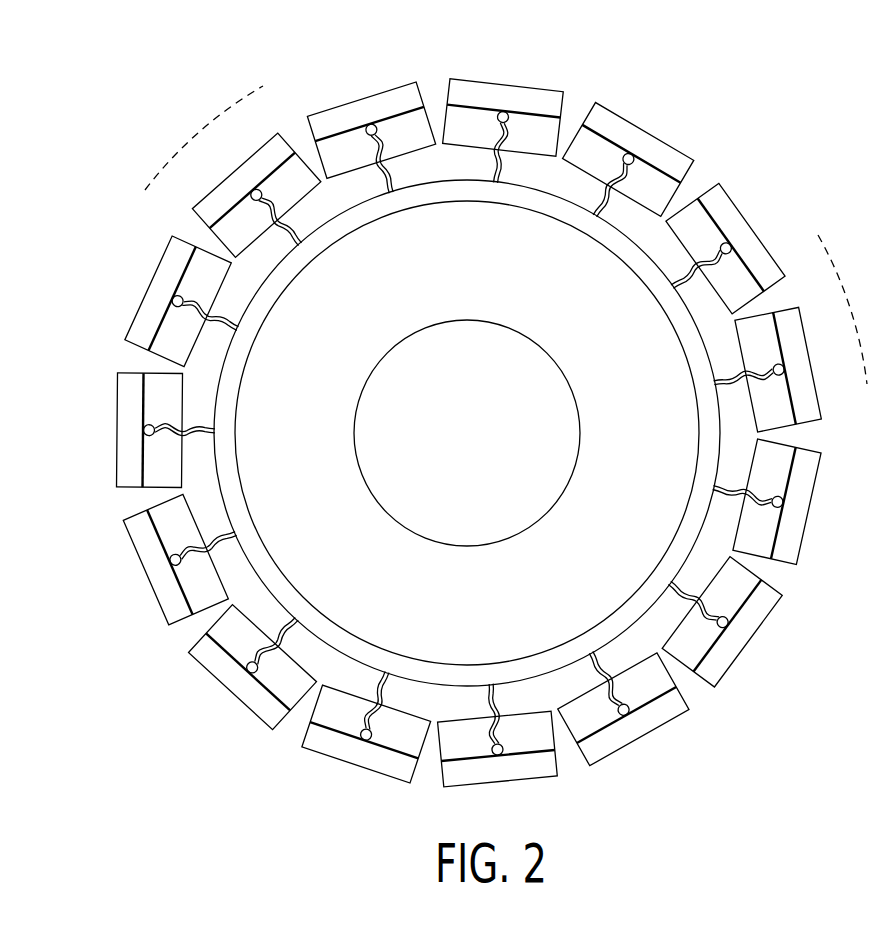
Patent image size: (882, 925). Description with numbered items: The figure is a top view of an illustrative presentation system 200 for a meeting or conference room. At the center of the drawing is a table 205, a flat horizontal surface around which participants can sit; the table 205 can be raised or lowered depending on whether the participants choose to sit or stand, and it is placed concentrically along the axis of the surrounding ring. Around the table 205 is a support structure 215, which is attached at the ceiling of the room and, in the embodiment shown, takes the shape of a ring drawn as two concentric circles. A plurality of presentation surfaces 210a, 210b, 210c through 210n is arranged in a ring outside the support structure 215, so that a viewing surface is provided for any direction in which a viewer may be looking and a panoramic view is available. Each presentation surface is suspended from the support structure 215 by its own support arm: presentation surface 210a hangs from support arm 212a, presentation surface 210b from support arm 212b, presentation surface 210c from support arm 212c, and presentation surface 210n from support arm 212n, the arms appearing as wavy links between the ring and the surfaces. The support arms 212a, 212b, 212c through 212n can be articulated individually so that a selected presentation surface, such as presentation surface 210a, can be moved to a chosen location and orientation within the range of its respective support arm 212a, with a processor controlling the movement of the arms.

The presentation system 200 is at (96, 124).
The table 205 is at (530, 507).
The presentation surface 210a is at (513, 86).
The presentation surface 210b is at (653, 133).
The presentation surface 210c is at (745, 215).
The presentation surface 210n is at (360, 98).
The support arm 212a is at (495, 178).
The support arm 212b is at (605, 208).
The support arm 212c is at (688, 288).
The support arm 212n is at (392, 193).
The support structure 215 is at (449, 205).